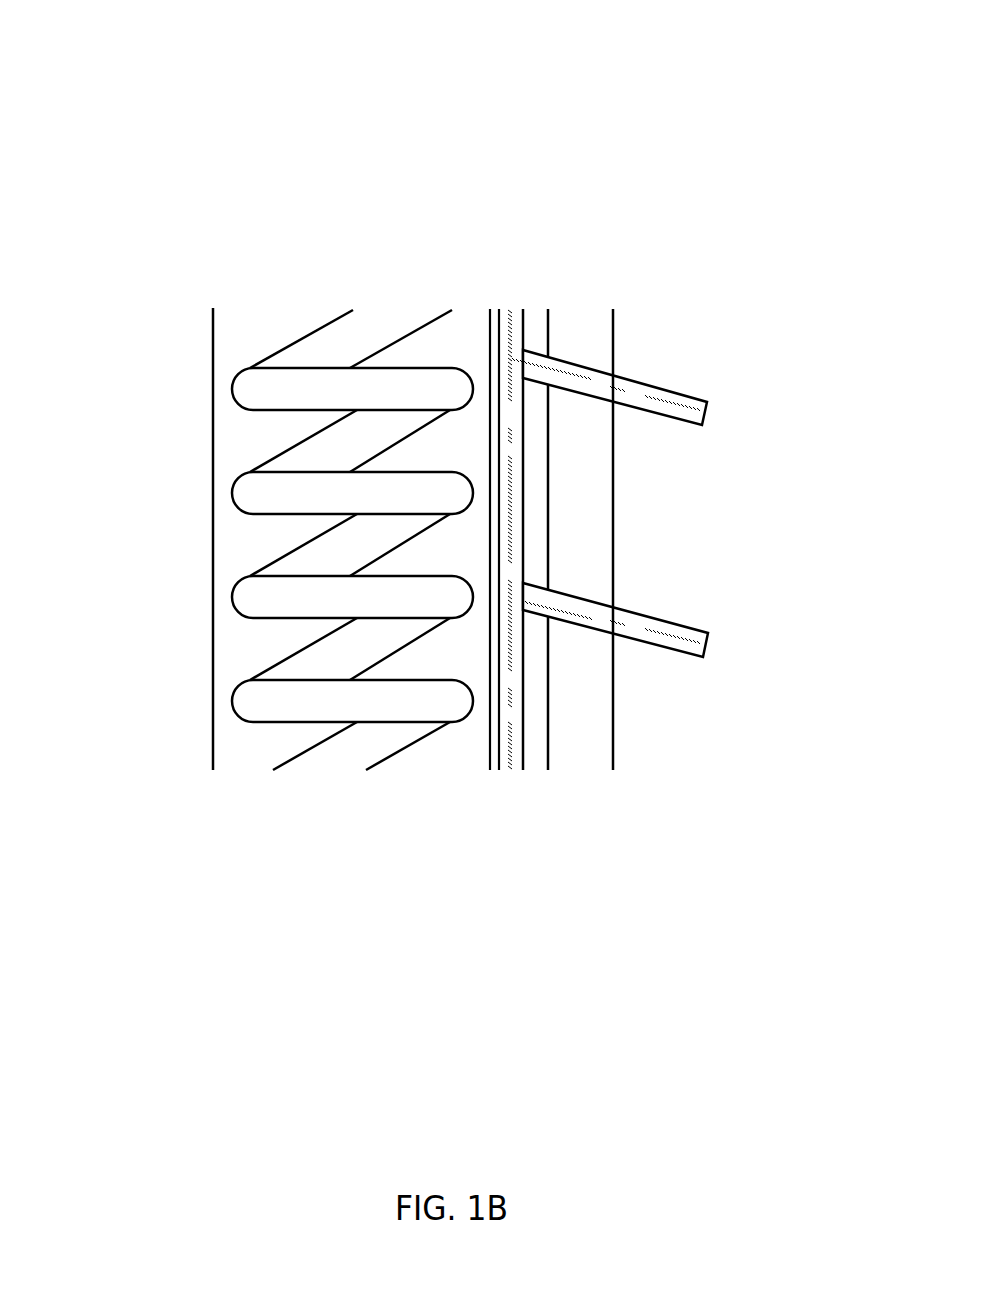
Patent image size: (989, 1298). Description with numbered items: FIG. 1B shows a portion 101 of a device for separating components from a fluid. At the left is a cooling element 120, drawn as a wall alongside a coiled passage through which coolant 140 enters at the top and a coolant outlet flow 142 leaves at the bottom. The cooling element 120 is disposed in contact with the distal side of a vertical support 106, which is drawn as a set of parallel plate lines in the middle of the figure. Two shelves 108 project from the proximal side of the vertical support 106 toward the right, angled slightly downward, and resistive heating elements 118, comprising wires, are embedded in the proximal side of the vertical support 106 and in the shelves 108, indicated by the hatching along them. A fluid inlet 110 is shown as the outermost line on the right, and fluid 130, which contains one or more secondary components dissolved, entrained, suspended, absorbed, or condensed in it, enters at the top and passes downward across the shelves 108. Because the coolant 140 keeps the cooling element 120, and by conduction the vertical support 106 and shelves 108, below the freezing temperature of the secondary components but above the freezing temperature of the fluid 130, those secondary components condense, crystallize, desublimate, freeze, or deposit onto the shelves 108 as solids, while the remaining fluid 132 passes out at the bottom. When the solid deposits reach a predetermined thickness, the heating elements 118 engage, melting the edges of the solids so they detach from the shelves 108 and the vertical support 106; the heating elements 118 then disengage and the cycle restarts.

The portion of the device 101 is at (118, 58).
The vertical support 106 is at (523, 473).
The shelves 108 is at (707, 403).
The fluid inlet 110 is at (615, 310).
The resistive heating elements 118 is at (655, 400).
The cooling element 120 is at (212, 328).
The fluid 130 is at (582, 280).
The fluid 132 is at (581, 772).
The coolant 140 is at (388, 280).
The flow outlet direction 142 is at (330, 772).